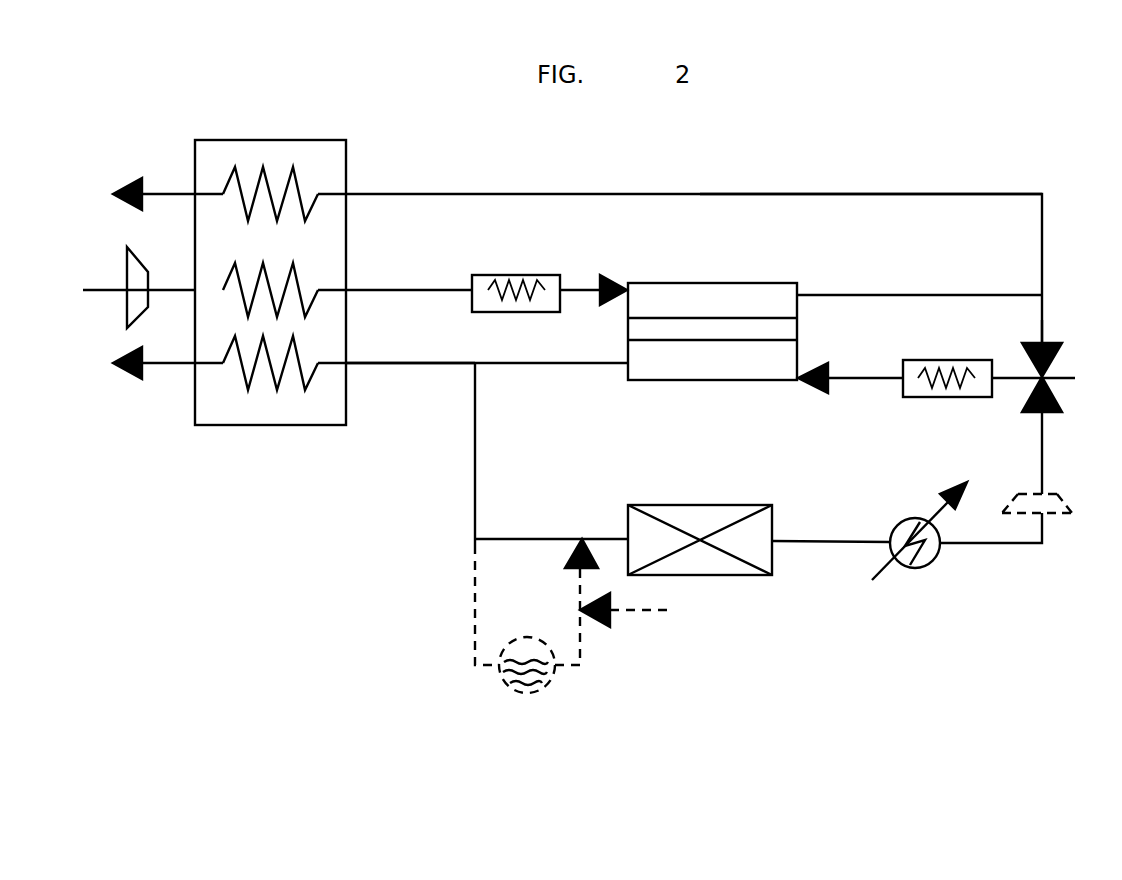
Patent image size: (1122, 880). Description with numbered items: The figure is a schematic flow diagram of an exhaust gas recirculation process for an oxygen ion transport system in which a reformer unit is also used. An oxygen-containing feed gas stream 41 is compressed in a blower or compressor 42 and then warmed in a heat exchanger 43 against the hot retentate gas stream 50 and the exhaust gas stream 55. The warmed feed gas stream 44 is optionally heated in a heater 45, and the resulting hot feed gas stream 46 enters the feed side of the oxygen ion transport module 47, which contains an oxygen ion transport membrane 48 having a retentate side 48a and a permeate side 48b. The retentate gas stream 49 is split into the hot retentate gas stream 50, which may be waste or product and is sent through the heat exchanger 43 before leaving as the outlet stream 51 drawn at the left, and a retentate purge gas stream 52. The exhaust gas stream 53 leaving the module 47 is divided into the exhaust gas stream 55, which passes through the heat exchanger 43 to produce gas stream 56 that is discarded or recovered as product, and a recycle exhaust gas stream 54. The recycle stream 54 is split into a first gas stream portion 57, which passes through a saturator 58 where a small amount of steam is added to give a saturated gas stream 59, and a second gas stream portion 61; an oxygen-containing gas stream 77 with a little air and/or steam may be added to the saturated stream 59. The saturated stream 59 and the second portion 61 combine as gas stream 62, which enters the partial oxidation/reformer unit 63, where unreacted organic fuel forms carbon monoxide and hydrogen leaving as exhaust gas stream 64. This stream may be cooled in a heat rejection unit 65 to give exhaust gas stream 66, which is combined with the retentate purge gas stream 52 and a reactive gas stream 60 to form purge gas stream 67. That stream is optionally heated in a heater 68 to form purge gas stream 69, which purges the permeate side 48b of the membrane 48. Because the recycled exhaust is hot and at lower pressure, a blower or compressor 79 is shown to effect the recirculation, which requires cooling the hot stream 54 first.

The oxygen-containing feed gas stream 41 is at (105, 292).
The blower or compressor 42 is at (141, 260).
The heat exchanger 43 is at (300, 427).
The warmed feed gas stream 44 is at (397, 288).
The heater 45 is at (507, 275).
The hot feed gas stream 46 is at (575, 287).
The oxygen ion transport module 47 is at (648, 282).
The oxygen ion transport membrane 48 is at (628, 330).
The retentate side 48a is at (752, 318).
The permeate side 48b is at (693, 343).
The retentate gas stream 49 is at (888, 293).
The hot retentate gas stream 50 is at (705, 195).
The exhaust outlet 51 is at (165, 192).
The retentate purge gas stream 52 is at (1045, 335).
The exhaust gas stream 53 is at (500, 367).
The recycle exhaust gas stream 54 is at (473, 478).
The exhaust gas stream 55 is at (410, 368).
The gas stream 56 is at (167, 365).
The first gas stream portion 57 is at (468, 603).
The saturator 58 is at (555, 685).
The saturated gas stream 59 is at (583, 633).
The reactive gas stream 60 is at (1068, 385).
The second gas stream portion 61 is at (532, 535).
The gas stream 62 is at (600, 535).
The partial oxidation/reformer unit 63 is at (722, 577).
The exhaust gas stream 64 is at (850, 538).
The heat rejection unit 65 is at (893, 520).
The exhaust gas stream 66 is at (975, 548).
The purge gas stream 67 is at (1012, 368).
The heater 68 is at (948, 360).
The purge gas stream 69 is at (855, 380).
The oxygen-containing gas stream 77 is at (655, 612).
The blower or compressor 79 is at (1075, 513).